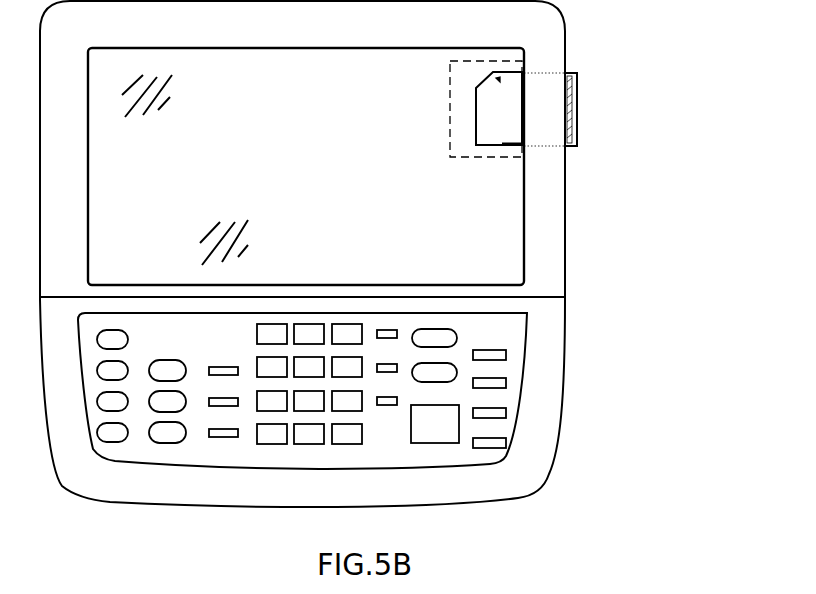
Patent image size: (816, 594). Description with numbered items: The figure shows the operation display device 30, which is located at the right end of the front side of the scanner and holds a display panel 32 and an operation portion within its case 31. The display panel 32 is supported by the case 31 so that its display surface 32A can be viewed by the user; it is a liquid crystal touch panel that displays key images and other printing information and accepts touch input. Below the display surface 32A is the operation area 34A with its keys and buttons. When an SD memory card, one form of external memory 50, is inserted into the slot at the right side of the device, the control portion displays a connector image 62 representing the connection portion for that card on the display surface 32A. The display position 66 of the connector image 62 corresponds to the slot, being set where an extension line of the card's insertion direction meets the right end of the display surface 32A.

The operation display device 30 is at (73, 512).
The case 31 is at (566, 36).
The display panel 32 is at (505, 244).
The display surface 32A is at (246, 96).
The operation panel 34A is at (205, 351).
The external memory 50 is at (578, 100).
The connector image 62 is at (489, 147).
The display position 66 is at (450, 98).